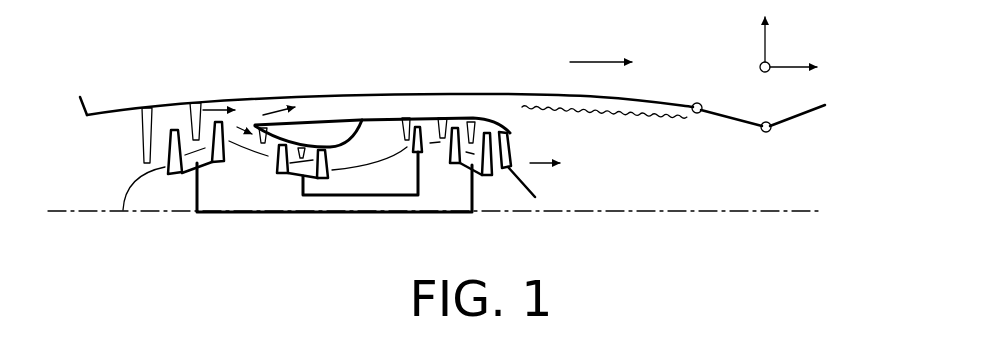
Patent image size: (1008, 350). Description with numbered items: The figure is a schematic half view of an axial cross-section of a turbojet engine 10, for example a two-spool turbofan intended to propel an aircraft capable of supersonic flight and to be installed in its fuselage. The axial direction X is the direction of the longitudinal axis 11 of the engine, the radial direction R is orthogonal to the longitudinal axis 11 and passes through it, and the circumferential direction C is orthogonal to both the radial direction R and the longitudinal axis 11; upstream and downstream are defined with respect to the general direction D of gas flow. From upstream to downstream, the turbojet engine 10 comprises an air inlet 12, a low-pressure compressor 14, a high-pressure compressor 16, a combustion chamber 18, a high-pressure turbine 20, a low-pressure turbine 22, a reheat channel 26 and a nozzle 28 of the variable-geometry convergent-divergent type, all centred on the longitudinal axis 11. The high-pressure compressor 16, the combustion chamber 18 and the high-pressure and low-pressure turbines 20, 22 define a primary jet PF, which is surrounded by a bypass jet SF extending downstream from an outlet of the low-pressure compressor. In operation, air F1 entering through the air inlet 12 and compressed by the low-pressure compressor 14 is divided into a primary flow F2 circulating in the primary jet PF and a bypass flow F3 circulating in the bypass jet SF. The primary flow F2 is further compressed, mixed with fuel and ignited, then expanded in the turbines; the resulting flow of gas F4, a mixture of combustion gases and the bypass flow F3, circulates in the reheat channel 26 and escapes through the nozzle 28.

The turbojet engine 10 is at (241, 66).
The longitudinal axis 11 is at (777, 213).
The air inlet 12 is at (112, 158).
The low-pressure compressor 14 is at (165, 119).
The high-pressure compressor 16 is at (290, 144).
The combustion chamber 18 is at (378, 136).
The high-pressure turbine 20 is at (430, 127).
The low-pressure turbine 22 is at (501, 130).
The reheat channel 26 is at (594, 168).
The nozzle 28 is at (727, 121).
The air F1 is at (208, 100).
The primary flow F2 is at (238, 130).
The bypass flow F3 is at (271, 106).
The flow of gas F4 is at (543, 166).
The bypass jet SF is at (348, 108).
The primary jet PF is at (312, 165).
The general direction of gas flow D is at (603, 62).
The circumferential direction C is at (748, 91).
The radial direction R is at (766, 31).
The axial direction X is at (800, 66).